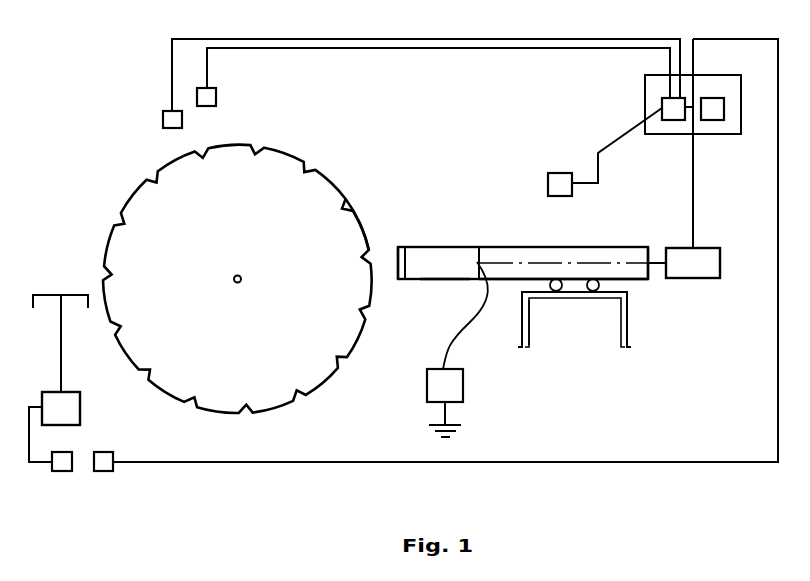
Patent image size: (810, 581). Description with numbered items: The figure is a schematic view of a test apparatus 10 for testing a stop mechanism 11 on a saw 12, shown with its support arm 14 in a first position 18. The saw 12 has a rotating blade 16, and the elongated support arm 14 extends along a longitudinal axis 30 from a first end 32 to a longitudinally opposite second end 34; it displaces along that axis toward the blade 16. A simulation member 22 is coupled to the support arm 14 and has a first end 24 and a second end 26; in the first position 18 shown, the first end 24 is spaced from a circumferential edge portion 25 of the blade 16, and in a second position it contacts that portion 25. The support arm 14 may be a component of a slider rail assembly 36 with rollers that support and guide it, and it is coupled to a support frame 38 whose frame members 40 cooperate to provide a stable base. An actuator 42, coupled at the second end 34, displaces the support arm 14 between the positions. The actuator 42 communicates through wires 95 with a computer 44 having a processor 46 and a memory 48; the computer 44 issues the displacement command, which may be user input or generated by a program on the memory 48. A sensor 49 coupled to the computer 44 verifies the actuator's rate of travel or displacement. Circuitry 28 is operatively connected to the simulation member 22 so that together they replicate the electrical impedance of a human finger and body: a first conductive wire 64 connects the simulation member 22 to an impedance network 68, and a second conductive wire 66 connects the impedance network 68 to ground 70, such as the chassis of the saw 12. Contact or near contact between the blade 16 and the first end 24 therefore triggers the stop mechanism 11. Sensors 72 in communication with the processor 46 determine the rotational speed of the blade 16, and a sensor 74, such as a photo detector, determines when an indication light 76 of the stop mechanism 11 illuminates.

The test apparatus 10 is at (562, 114).
The stop mechanism 11 is at (61, 408).
The saw 12 is at (56, 293).
The support arm 14 is at (536, 265).
The blade 16 is at (308, 191).
The first position 18 is at (413, 196).
The simulation member 22 is at (441, 247).
The first end 24 is at (397, 277).
The portion 25 is at (366, 230).
The second end 26 is at (445, 282).
The circuitry 28 is at (480, 345).
The longitudinal axis 30 is at (635, 263).
The first end 32 is at (507, 247).
The second end 34 is at (640, 281).
The slider rail assembly 36 is at (562, 291).
The support frame 38 is at (628, 334).
The frame members 40 is at (530, 323).
The actuator 42 is at (722, 260).
The computer 44 is at (645, 97).
The processor 46 is at (672, 121).
The memory 48 is at (719, 121).
The sensor 49 is at (556, 173).
The first conductive wire 64 is at (447, 345).
The second conductive wire 66 is at (443, 410).
The impedance network 68 is at (427, 385).
The ground 70 is at (460, 428).
The sensors 72 is at (163, 120).
The sensor 74 is at (104, 472).
The indication light 76 is at (62, 472).
The wires 95 is at (695, 196).